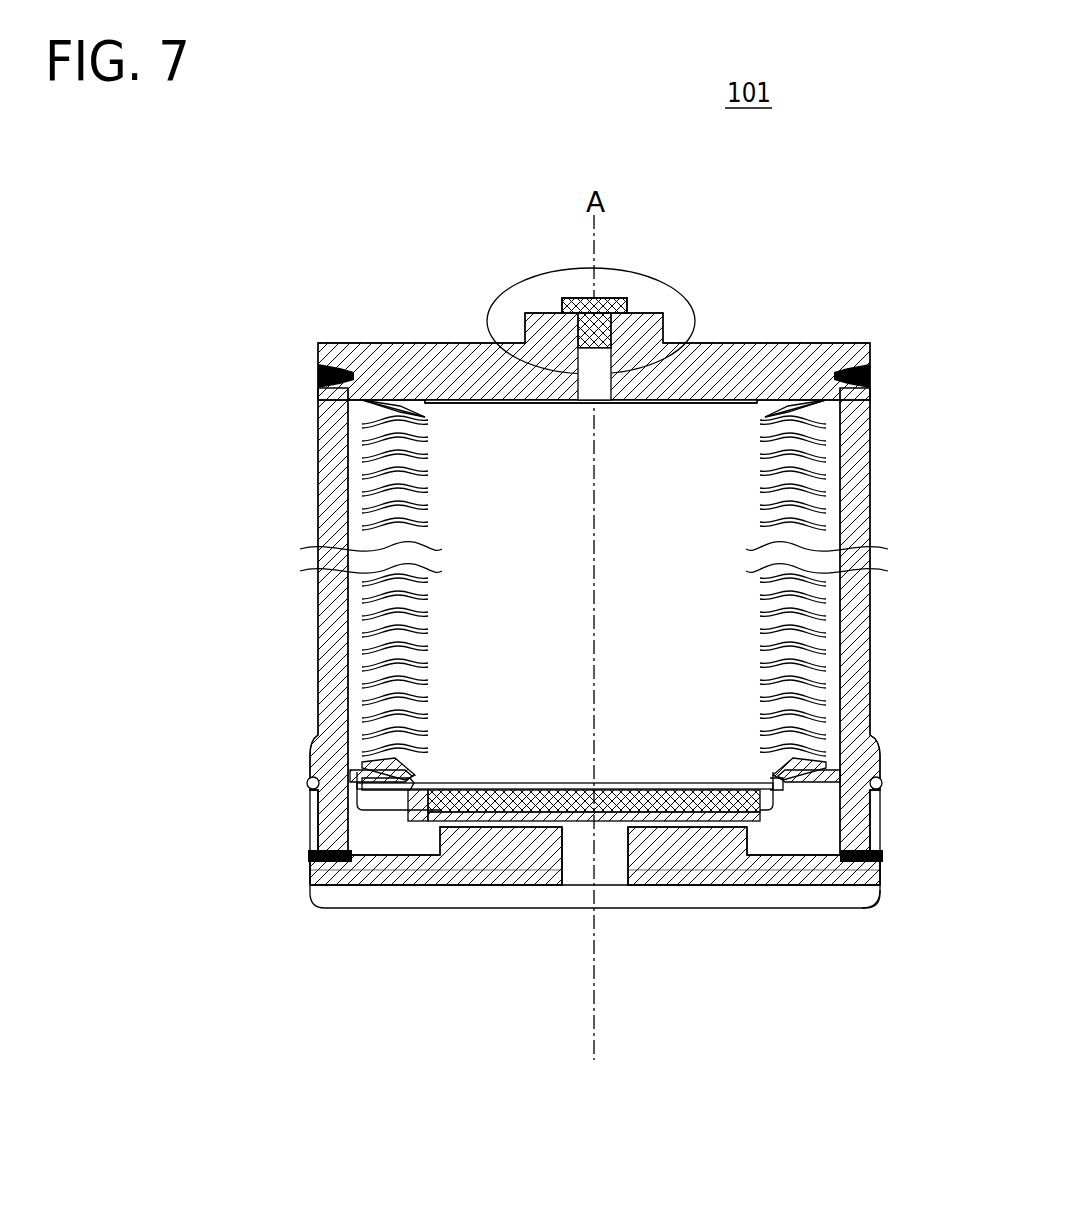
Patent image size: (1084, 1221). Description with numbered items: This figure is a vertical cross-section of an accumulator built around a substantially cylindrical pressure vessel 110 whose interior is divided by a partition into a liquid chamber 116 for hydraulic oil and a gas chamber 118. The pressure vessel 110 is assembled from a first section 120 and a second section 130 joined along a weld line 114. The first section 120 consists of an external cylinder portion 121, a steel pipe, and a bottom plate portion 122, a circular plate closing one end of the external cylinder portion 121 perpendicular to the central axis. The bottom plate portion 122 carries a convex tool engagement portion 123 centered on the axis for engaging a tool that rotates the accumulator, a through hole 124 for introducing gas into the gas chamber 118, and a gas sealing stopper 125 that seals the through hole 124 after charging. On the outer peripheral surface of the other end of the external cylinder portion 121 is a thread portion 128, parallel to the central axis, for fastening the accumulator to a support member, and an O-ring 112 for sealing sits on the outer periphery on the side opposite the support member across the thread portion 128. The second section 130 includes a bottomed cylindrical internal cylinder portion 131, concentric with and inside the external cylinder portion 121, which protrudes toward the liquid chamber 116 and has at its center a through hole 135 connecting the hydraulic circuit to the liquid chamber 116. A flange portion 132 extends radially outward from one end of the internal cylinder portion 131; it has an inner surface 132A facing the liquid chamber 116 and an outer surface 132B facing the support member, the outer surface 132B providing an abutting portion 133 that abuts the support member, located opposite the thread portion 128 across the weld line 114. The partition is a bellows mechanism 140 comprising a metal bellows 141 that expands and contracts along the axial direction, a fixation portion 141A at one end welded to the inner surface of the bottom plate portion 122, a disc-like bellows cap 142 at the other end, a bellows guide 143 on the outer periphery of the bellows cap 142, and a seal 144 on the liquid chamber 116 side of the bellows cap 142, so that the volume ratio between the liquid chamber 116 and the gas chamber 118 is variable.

The pressure vessel 110 is at (106, 353).
The O-ring 112 is at (884, 782).
The weld line 114 is at (885, 868).
The liquid chamber 116 is at (800, 837).
The gas chamber 118 is at (712, 503).
The first section 120 is at (178, 327).
The external cylinder portion 121 is at (330, 422).
The bottom plate portion 122 is at (397, 342).
The tool engagement portion 123 is at (540, 313).
The through hole 124 is at (604, 402).
The gas sealing stopper 125 is at (615, 298).
The thread portion 128 is at (894, 797).
The second section 130 is at (166, 793).
The internal cylinder portion 131 is at (440, 828).
The flange portion 132 is at (226, 832).
The inner surface 132A is at (440, 843).
The outer surface 132B is at (395, 882).
The abutting portion 133 is at (395, 908).
The through hole 135 is at (578, 885).
The bellows mechanism 140 is at (676, 627).
The bellows 141 is at (777, 632).
The fixation portion 141A is at (773, 403).
The bellows cap 142 is at (703, 789).
The bellows guide 143 is at (770, 783).
The seal 144 is at (775, 815).